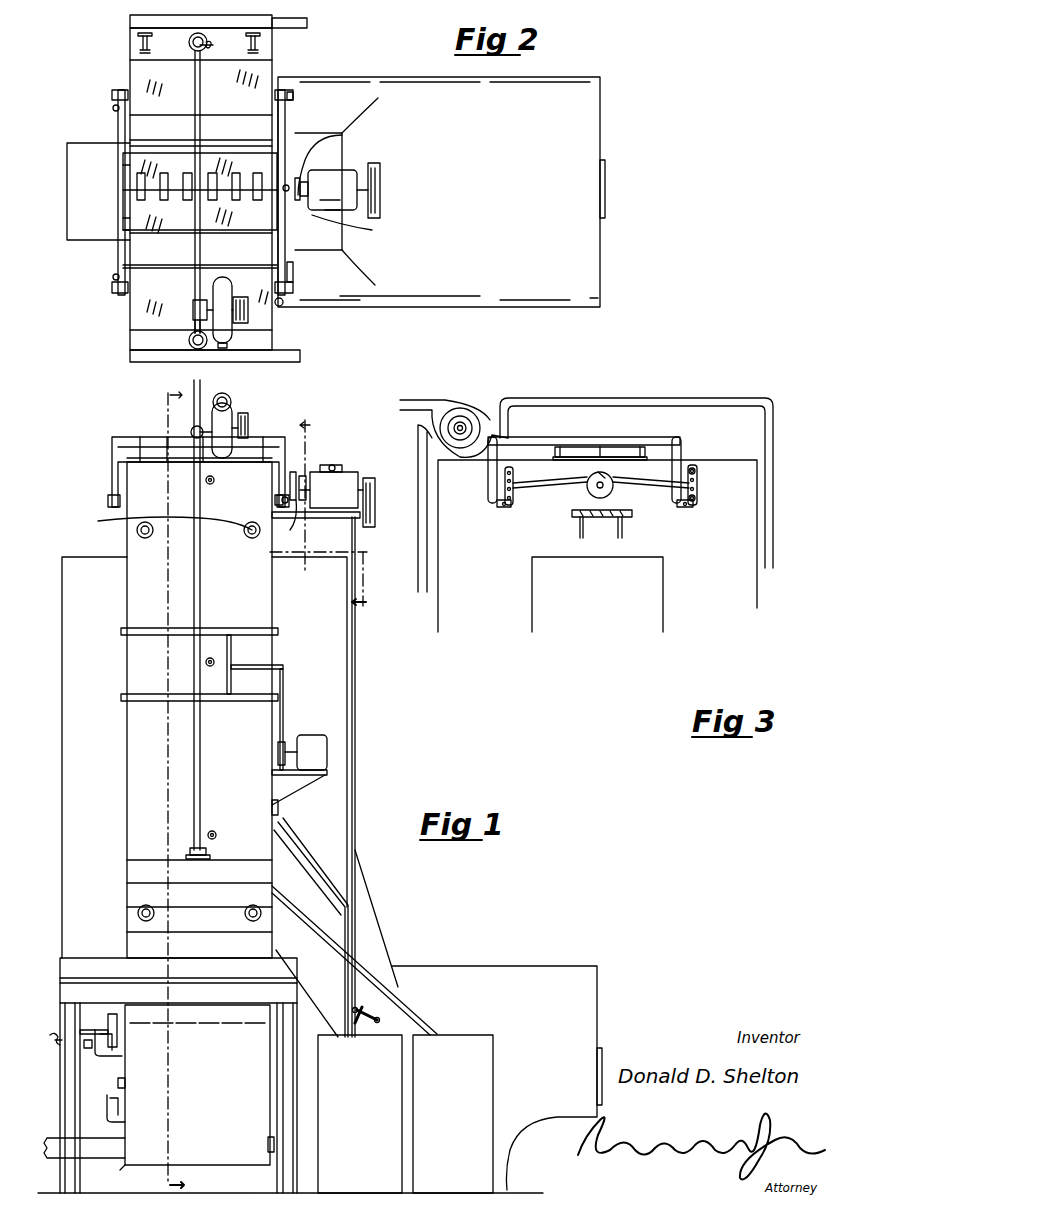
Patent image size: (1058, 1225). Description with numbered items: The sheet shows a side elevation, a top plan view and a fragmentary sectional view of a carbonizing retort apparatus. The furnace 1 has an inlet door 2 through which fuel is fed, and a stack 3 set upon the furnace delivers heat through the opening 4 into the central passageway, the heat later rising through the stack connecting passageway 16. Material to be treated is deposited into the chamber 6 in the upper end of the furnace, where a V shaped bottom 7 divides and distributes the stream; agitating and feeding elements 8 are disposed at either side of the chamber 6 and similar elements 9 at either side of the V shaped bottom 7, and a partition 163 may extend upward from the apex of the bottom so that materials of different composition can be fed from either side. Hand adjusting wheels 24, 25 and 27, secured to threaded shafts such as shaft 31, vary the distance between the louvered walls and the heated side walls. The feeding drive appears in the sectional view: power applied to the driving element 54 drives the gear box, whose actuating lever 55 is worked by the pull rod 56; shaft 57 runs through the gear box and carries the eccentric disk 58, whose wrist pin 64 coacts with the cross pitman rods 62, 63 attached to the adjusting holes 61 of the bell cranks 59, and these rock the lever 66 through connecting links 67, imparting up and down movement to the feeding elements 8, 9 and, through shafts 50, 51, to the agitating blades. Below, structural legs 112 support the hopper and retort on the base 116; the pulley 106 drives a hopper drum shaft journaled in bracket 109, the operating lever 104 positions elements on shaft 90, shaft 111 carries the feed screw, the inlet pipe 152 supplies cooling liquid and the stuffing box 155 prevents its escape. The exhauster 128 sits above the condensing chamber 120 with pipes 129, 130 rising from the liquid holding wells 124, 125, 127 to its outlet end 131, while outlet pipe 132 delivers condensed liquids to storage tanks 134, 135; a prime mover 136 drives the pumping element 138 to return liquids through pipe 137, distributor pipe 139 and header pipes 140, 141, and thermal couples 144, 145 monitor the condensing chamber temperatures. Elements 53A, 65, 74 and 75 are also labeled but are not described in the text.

In FIG. 2, the furnace 1 is at (597, 108).
In FIG. 1, the furnace 1 is at (520, 967).
In FIG. 2, the inlet door 2 is at (605, 183).
In FIG. 1, the inlet door 2 is at (603, 1060).
In FIG. 1, the stack 3 is at (326, 510).
In FIG. 3, the stack 3 is at (660, 577).
In FIG. 1, the opening 4 is at (178, 787).
In FIG. 2, the chamber 6 is at (135, 165).
In FIG. 2, the V shaped bottom 7 is at (130, 235).
In FIG. 2, the agitating and feeding elements 8 is at (145, 145).
In FIG. 1, the agitating and feeding elements 8 is at (265, 440).
In FIG. 3, the agitating and feeding elements 8 is at (572, 447).
In FIG. 2, the feeding elements 9 is at (130, 185).
In FIG. 3, the feeding elements 9 is at (605, 447).
In FIG. 2, the stack connecting passageway 16 is at (75, 210).
In FIG. 1, the stack connecting passageway 16 is at (85, 828).
In FIG. 1, the hand adjusting wheel 24 is at (138, 918).
In FIG. 1, the hand adjusting wheel 25 is at (170, 523).
In FIG. 2, the hand adjusting wheel 27 is at (138, 35).
In FIG. 2, the shaft 31 is at (152, 42).
In FIG. 1, the shaft 50 is at (275, 506).
In FIG. 3, the shaft 50 is at (515, 505).
In FIG. 2, the shaft 51 is at (291, 98).
In FIG. 3, the shaft 51 is at (697, 505).
In FIG. 2, the motor 53A is at (340, 185).
In FIG. 1, the motor 53A is at (358, 488).
In FIG. 2, the driving element 54 is at (380, 200).
In FIG. 1, the driving element 54 is at (376, 505).
In FIG. 1, the actuating lever 55 is at (340, 477).
In FIG. 1, the pull rod 56 is at (358, 880).
In FIG. 2, the shaft 57 is at (372, 230).
In FIG. 3, the shaft 57 is at (612, 492).
In FIG. 2, the eccentric disk 58 is at (344, 130).
In FIG. 1, the eccentric disk 58 is at (292, 524).
In FIG. 2, the bell crank 59 is at (290, 92).
In FIG. 1, the bell crank 59 is at (283, 520).
In FIG. 3, the bell crank 59 is at (697, 476).
In FIG. 3, the operating adjusting holes 61 is at (505, 480).
In FIG. 2, the cross pitman rod 62 is at (285, 268).
In FIG. 1, the cross pitman rod 62 is at (298, 472).
In FIG. 3, the cross pitman rod 62 is at (648, 492).
In FIG. 3, the cross pitman rod 63 is at (548, 490).
In FIG. 2, the wrist pin 64 is at (283, 190).
In FIG. 3, the wrist pin 64 is at (603, 475).
In FIG. 3, the foot bracket 65 is at (500, 507).
In FIG. 2, the operating lever 66 is at (285, 125).
In FIG. 1, the operating lever 66 is at (150, 437).
In FIG. 3, the operating lever 66 is at (540, 437).
In FIG. 2, the connecting link 67 is at (281, 306).
In FIG. 1, the connecting link 67 is at (290, 466).
In FIG. 3, the connecting link 67 is at (681, 445).
In FIG. 1, the box 74 is at (300, 1060).
In FIG. 1, the box bottom 75 is at (120, 1170).
In FIG. 1, the shaft 90 is at (125, 1082).
In FIG. 1, the operating lever 104 is at (125, 1102).
In FIG. 1, the pulley 106 is at (122, 1042).
In FIG. 1, the bracket 109 is at (92, 1055).
In FIG. 1, the shaft 111 is at (275, 1150).
In FIG. 1, the structural leg 112 is at (75, 1098).
In FIG. 1, the base 116 is at (190, 970).
In FIG. 2, the condensing chamber 120 is at (240, 310).
In FIG. 1, the condensing chamber 120 is at (243, 425).
In FIG. 1, the liquid holding well 124 is at (265, 945).
In FIG. 2, the liquid holding well 125 is at (300, 355).
In FIG. 1, the liquid holding well 125 is at (255, 890).
In FIG. 2, the liquid holding well 127 is at (300, 22).
In FIG. 2, the exhauster 128 is at (225, 285).
In FIG. 1, the exhauster 128 is at (250, 418).
In FIG. 3, the exhauster 128 is at (462, 406).
In FIG. 2, the pipe 129 is at (195, 333).
In FIG. 1, the pipe 129 is at (203, 595).
In FIG. 2, the pipe 130 is at (205, 95).
In FIG. 1, the pipe 130 is at (200, 400).
In FIG. 3, the pipe 130 is at (540, 397).
In FIG. 2, the outlet end 131 is at (207, 345).
In FIG. 1, the outlet end 131 is at (232, 410).
In FIG. 1, the outlet pipe 132 is at (355, 963).
In FIG. 1, the storage tank 134 is at (470, 1043).
In FIG. 1, the storage tank 135 is at (200, 1100).
In FIG. 1, the prime mover 136 is at (327, 750).
In FIG. 1, the pipe 137 is at (300, 845).
In FIG. 1, the pumping element 138 is at (285, 745).
In FIG. 1, the distributor pipe 139 is at (285, 667).
In FIG. 1, the header pipe 140 is at (220, 633).
In FIG. 1, the header pipe 141 is at (248, 701).
In FIG. 1, the thermal couple 144 is at (216, 835).
In FIG. 2, the thermal couple 145 is at (272, 60).
In FIG. 1, the thermal couple 145 is at (215, 480).
In FIG. 1, the inlet pipe 152 is at (53, 1045).
In FIG. 1, the stuffing box 155 is at (108, 1025).
In FIG. 2, the partition 163 is at (226, 165).